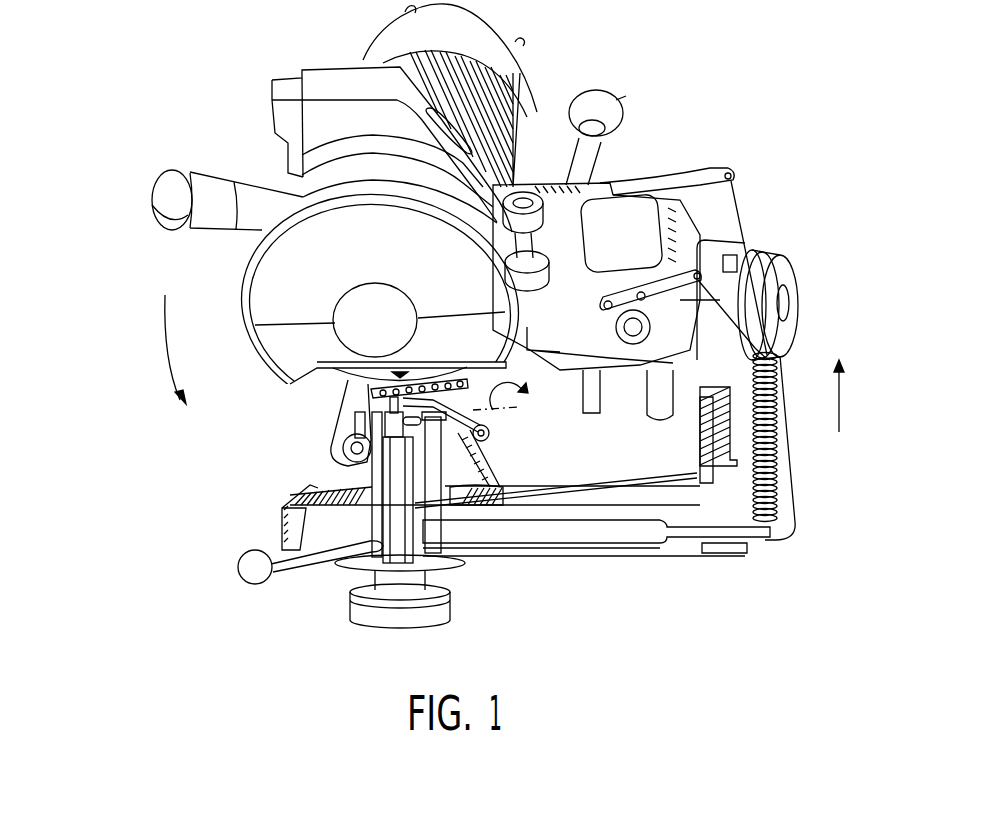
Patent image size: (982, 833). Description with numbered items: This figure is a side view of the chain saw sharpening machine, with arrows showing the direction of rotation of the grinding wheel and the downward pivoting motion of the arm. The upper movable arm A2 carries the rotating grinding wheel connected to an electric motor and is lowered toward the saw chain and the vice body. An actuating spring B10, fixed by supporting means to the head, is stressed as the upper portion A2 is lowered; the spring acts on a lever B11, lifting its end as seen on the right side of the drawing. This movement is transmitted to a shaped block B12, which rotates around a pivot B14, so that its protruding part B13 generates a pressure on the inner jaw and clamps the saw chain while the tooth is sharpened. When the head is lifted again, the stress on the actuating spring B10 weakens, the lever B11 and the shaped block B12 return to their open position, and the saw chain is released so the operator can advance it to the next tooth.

The upper movable arm A2 is at (475, 220).
The actuating spring B10 is at (778, 487).
The lever B11 is at (610, 532).
The shaped block B12 is at (417, 430).
The protruding part B13 is at (367, 405).
The pivot B14 is at (412, 421).